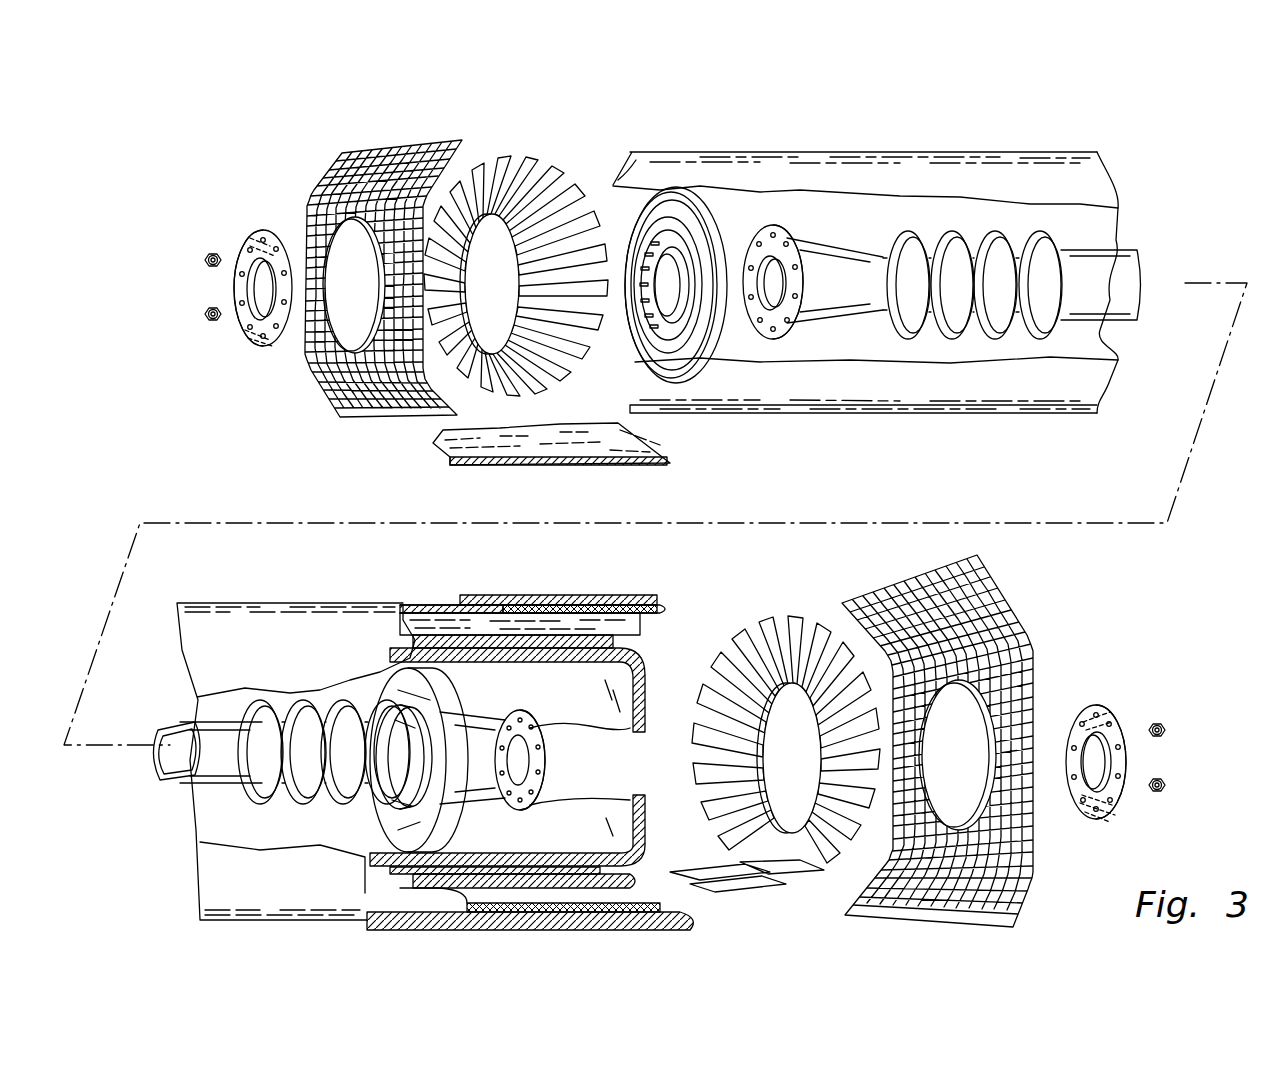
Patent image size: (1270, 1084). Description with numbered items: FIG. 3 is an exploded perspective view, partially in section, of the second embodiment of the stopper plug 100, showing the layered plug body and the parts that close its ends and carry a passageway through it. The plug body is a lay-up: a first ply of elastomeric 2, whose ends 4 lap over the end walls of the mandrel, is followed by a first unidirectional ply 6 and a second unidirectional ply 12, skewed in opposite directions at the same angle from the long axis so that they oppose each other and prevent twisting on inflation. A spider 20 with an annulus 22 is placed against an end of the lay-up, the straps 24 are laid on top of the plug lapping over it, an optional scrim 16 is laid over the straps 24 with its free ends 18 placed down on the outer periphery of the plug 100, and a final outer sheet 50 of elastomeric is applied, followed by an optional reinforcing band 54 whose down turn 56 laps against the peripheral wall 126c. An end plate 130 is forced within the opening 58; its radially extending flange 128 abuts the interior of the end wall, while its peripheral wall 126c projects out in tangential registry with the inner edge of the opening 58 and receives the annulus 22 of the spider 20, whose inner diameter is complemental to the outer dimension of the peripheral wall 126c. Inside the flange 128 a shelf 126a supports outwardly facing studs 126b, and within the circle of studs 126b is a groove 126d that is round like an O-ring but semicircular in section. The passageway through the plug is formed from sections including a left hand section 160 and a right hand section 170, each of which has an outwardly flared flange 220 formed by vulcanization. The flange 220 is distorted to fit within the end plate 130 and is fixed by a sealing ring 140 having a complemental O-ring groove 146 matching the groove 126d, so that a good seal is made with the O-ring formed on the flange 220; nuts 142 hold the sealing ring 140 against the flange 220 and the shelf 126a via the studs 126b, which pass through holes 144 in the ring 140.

The first ply of elastomeric 2 is at (550, 662).
The ends of the first ply of elastomeric 4 is at (626, 654).
The first unidirectional ply 6 is at (433, 650).
The second unidirectional ply 12 is at (424, 636).
The scrim 16 is at (326, 208).
The free ends of the scrim 18 is at (346, 158).
The spider 20 is at (497, 123).
The annulus of the spider 22 is at (463, 261).
The straps 24 is at (545, 156).
The final outer sheet of elastomeric 50 is at (980, 190).
The reinforcing band 54 is at (570, 449).
The down turn 56 is at (435, 448).
The opening 58 is at (370, 292).
The plug 100 is at (1052, 128).
The shelf 126a is at (688, 368).
The studs 126b is at (637, 330).
The peripheral wall 126c is at (692, 240).
The groove 126d is at (670, 322).
The flange 128 is at (682, 190).
The end plate 130 is at (641, 168).
The sealing ring 140 is at (263, 230).
The nuts 142 is at (1160, 780).
The holes 144 is at (248, 338).
The O-ring groove 146 is at (1098, 728).
The left hand section 160 is at (1086, 228).
The right hand section 170 is at (234, 808).
The flange 220 is at (780, 236).